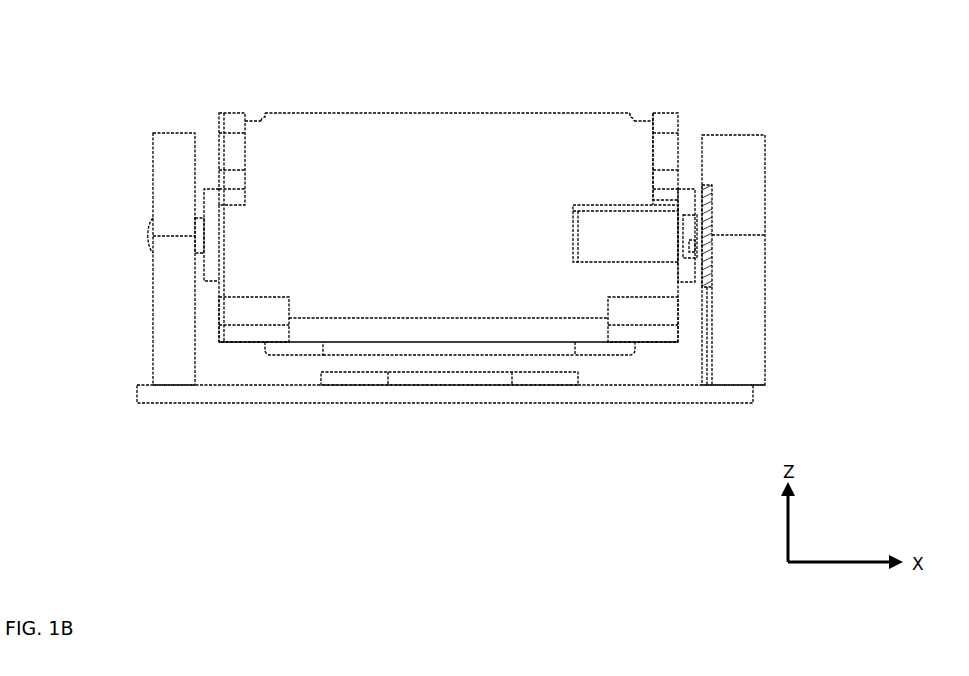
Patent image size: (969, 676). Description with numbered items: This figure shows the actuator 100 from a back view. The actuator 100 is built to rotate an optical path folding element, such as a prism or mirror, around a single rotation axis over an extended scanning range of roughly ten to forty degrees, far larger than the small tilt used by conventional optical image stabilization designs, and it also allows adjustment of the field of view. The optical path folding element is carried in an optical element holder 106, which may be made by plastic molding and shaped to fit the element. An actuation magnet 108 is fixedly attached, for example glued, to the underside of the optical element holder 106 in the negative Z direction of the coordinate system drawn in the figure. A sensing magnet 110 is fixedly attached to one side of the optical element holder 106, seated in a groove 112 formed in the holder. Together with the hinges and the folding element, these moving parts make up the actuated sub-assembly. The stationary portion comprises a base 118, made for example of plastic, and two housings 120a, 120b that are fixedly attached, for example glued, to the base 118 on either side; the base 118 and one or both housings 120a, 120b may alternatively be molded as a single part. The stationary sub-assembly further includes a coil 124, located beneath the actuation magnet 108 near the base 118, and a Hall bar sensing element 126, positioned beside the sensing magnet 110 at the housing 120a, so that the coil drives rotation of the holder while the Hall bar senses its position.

The actuator 100 is at (310, 43).
The optical element holder 106 is at (265, 153).
The actuation magnet 108 is at (568, 348).
The sensing magnet 110 is at (640, 230).
The groove 112 is at (573, 240).
The base 118 is at (442, 427).
The housing 120a is at (733, 345).
The housing 120b is at (175, 312).
The coil 124 is at (420, 375).
The Hall bar sensing element 126 is at (690, 234).